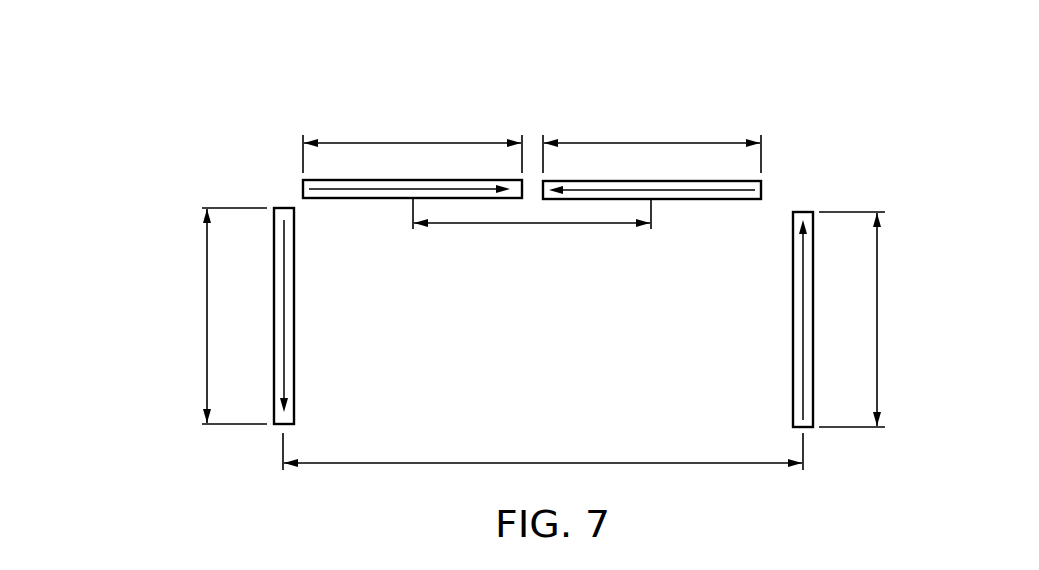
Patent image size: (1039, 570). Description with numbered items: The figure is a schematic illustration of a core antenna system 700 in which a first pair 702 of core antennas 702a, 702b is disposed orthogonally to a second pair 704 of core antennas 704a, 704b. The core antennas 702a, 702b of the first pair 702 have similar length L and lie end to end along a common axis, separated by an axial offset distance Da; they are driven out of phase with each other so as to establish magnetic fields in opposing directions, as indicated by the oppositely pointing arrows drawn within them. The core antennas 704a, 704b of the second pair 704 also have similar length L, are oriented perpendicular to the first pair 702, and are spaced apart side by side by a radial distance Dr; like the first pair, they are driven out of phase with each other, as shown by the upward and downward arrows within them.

The core antenna system 700 is at (170, 113).
The first pair of core antennas 702 is at (816, 92).
The core antenna 702a is at (315, 179).
The core antenna 702b is at (753, 181).
The second pair of core antennas 704 is at (137, 362).
The core antenna 704a is at (294, 303).
The core antenna 704b is at (793, 252).